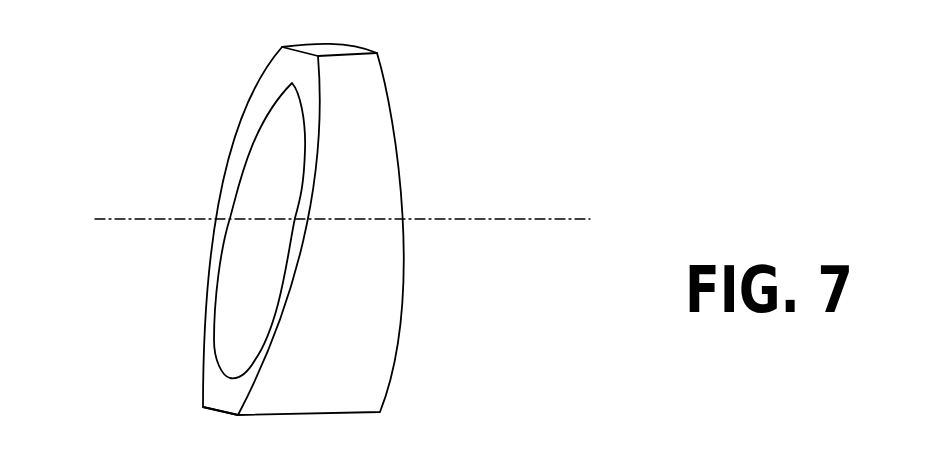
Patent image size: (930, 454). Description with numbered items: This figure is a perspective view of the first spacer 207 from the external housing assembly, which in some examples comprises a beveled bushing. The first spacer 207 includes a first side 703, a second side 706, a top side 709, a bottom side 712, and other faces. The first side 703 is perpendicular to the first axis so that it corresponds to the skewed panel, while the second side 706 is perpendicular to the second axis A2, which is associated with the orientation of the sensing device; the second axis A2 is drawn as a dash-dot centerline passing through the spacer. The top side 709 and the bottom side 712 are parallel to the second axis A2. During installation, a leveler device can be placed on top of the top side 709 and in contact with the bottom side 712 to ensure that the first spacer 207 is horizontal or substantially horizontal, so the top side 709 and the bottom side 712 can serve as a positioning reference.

The first spacer 207 is at (453, 35).
The top side 709 is at (348, 52).
The second side 706 is at (448, 305).
The first side 703 is at (102, 262).
The bottom side 712 is at (247, 412).
The second axis A2 is at (500, 219).